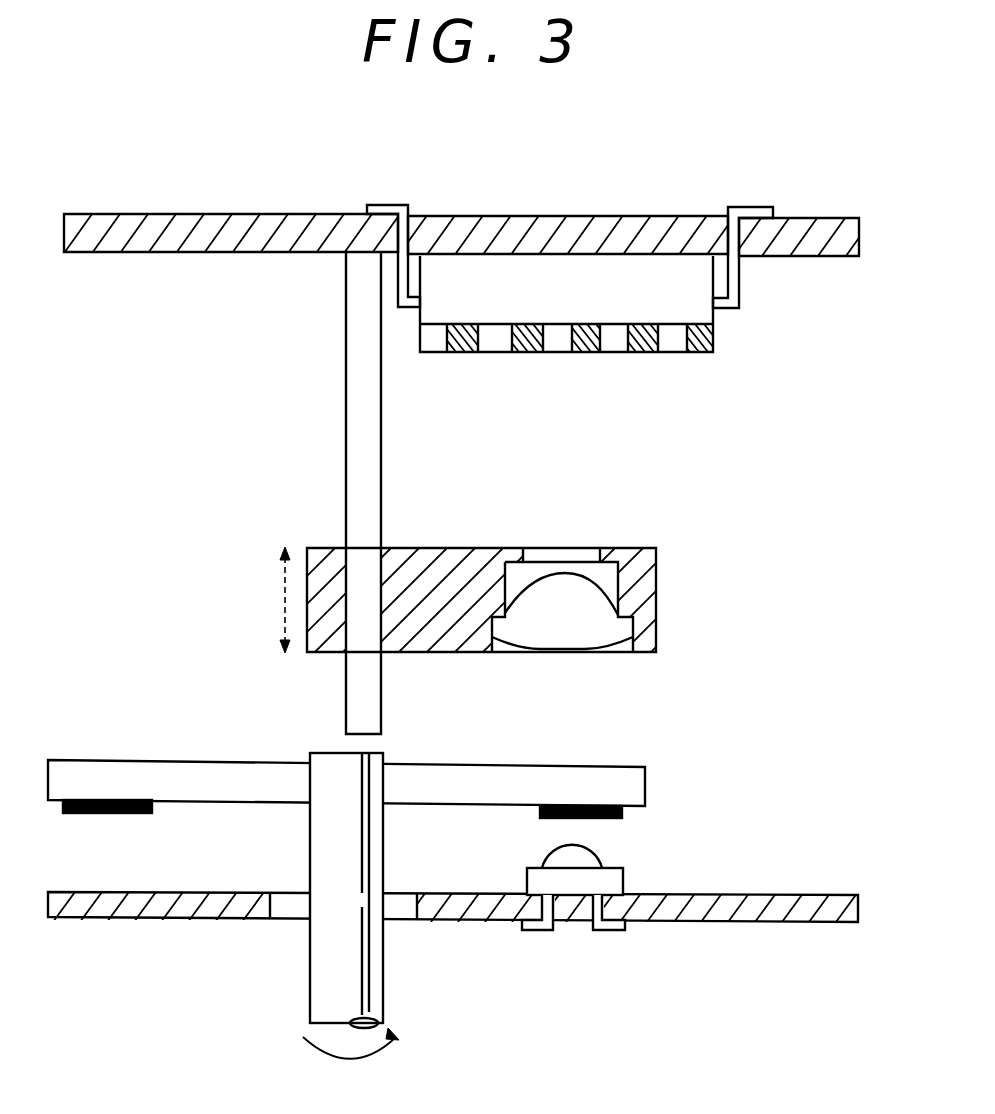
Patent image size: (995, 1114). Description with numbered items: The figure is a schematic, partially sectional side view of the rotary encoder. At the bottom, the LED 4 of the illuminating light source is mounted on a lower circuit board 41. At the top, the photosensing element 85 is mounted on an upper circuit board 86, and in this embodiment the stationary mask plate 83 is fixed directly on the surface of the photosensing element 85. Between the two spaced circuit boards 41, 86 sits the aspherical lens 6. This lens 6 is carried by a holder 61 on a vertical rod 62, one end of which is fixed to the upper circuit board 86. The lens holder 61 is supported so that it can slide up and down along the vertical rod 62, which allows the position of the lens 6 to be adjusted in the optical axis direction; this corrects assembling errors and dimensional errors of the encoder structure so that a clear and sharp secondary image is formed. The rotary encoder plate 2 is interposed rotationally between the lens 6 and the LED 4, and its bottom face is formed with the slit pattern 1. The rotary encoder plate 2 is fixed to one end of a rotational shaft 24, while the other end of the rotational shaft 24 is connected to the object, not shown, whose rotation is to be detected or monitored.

The upper circuit board 86 is at (610, 228).
The photosensing element 85 is at (690, 288).
The stationary mask plate 83 is at (710, 353).
The vertical rod 62 is at (367, 427).
The holder 61 is at (640, 578).
The aspherical lens 6 is at (590, 635).
The rotary encoder plate 2 is at (625, 785).
The slit pattern 1 is at (622, 810).
The LED 4 is at (623, 880).
The lower circuit board 41 is at (740, 923).
The rotational shaft 24 is at (328, 967).